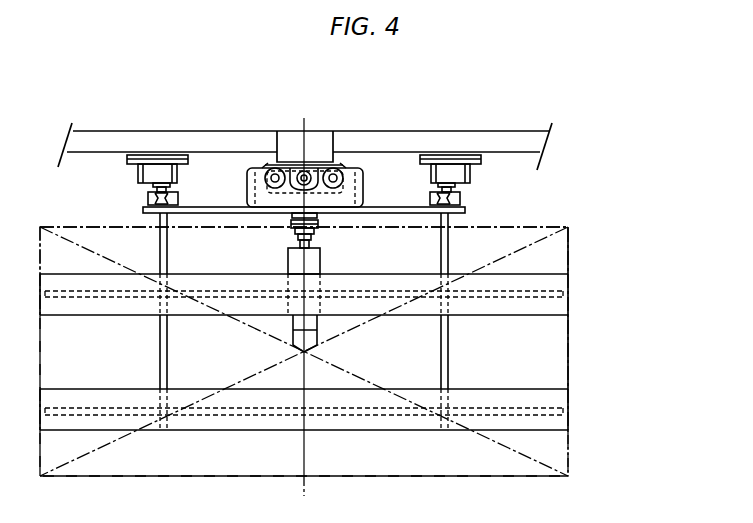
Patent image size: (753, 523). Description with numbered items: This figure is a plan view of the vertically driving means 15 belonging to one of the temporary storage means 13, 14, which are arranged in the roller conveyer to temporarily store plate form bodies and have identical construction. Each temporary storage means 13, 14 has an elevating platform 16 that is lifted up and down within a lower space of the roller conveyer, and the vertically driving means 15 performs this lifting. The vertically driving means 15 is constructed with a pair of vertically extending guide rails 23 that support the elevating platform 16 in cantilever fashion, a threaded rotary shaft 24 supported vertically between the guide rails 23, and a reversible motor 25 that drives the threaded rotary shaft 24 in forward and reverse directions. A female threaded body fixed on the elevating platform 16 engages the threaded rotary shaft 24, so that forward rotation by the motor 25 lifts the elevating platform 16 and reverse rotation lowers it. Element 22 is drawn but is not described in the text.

The temporary storage means 13 is at (569, 248).
The temporary storage means 14 is at (304, 351).
The vertically driving means 15 is at (367, 178).
The elevating platform 16 is at (445, 253).
The rail clip 22 is at (150, 195).
The vertically extending guide rails 23 is at (165, 190).
The threaded rotary shaft 24 is at (312, 185).
The reversible motor 25 is at (310, 325).